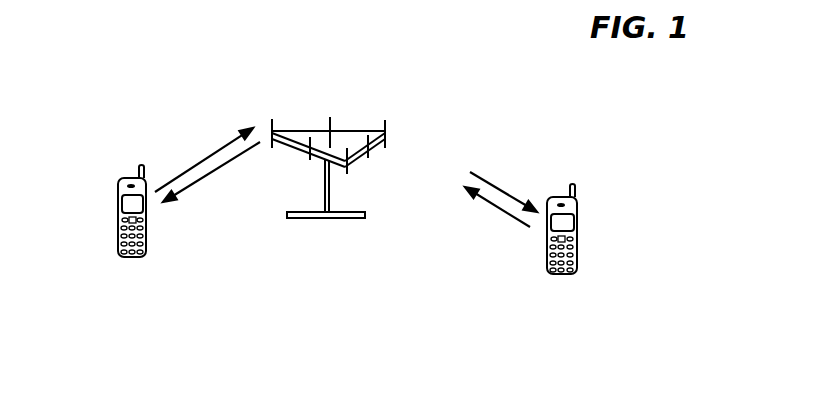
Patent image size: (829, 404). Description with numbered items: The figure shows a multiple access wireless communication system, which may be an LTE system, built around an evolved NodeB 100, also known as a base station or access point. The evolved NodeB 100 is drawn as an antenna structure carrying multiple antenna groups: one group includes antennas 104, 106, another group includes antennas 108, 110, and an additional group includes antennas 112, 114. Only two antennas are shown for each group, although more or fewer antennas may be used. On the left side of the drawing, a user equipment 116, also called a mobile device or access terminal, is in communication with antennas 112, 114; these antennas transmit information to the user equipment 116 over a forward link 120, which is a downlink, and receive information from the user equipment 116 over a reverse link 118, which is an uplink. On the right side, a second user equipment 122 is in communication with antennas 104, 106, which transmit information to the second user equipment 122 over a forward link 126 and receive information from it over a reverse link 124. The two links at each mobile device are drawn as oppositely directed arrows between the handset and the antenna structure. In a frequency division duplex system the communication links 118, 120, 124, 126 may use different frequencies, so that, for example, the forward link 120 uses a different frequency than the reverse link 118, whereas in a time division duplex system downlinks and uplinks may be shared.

The evolved NodeB 100 is at (330, 219).
The antenna 104 is at (348, 175).
The antenna 106 is at (369, 158).
The antenna 108 is at (387, 135).
The antenna 110 is at (330, 118).
The antenna 112 is at (272, 121).
The antenna 114 is at (310, 160).
The user equipment 116 is at (118, 197).
The reverse link 118 is at (212, 155).
The forward link 120 is at (198, 180).
The second user equipment 122 is at (578, 222).
The reverse link 124 is at (505, 212).
The forward link 126 is at (502, 188).